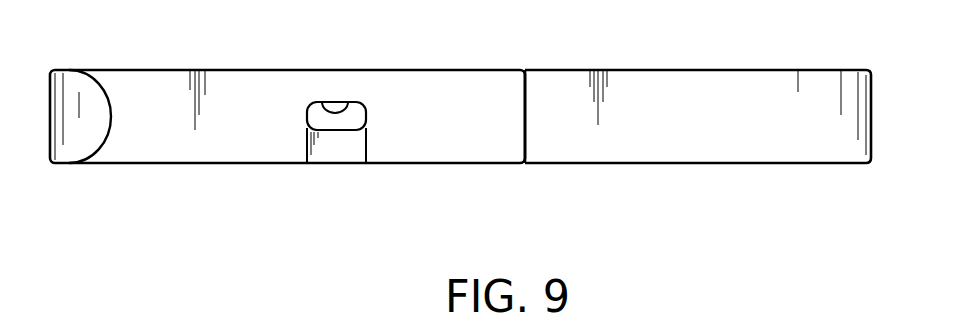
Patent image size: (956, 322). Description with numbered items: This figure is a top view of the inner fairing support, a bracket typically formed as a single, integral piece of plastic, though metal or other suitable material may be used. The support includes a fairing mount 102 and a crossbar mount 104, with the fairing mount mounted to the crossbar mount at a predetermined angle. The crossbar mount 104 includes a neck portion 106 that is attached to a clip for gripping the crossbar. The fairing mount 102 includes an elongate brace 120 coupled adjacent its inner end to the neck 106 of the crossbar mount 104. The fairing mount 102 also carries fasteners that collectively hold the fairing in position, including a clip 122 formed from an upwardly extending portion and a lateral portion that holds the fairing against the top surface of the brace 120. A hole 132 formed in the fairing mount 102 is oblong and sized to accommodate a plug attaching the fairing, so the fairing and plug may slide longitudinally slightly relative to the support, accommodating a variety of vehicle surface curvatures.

The fairing mount 102 is at (205, 167).
The crossbar mount 104 is at (725, 166).
The neck portion 106 is at (625, 83).
The elongate brace 120 is at (427, 83).
The clip 122 is at (95, 107).
The hole 132 is at (346, 105).